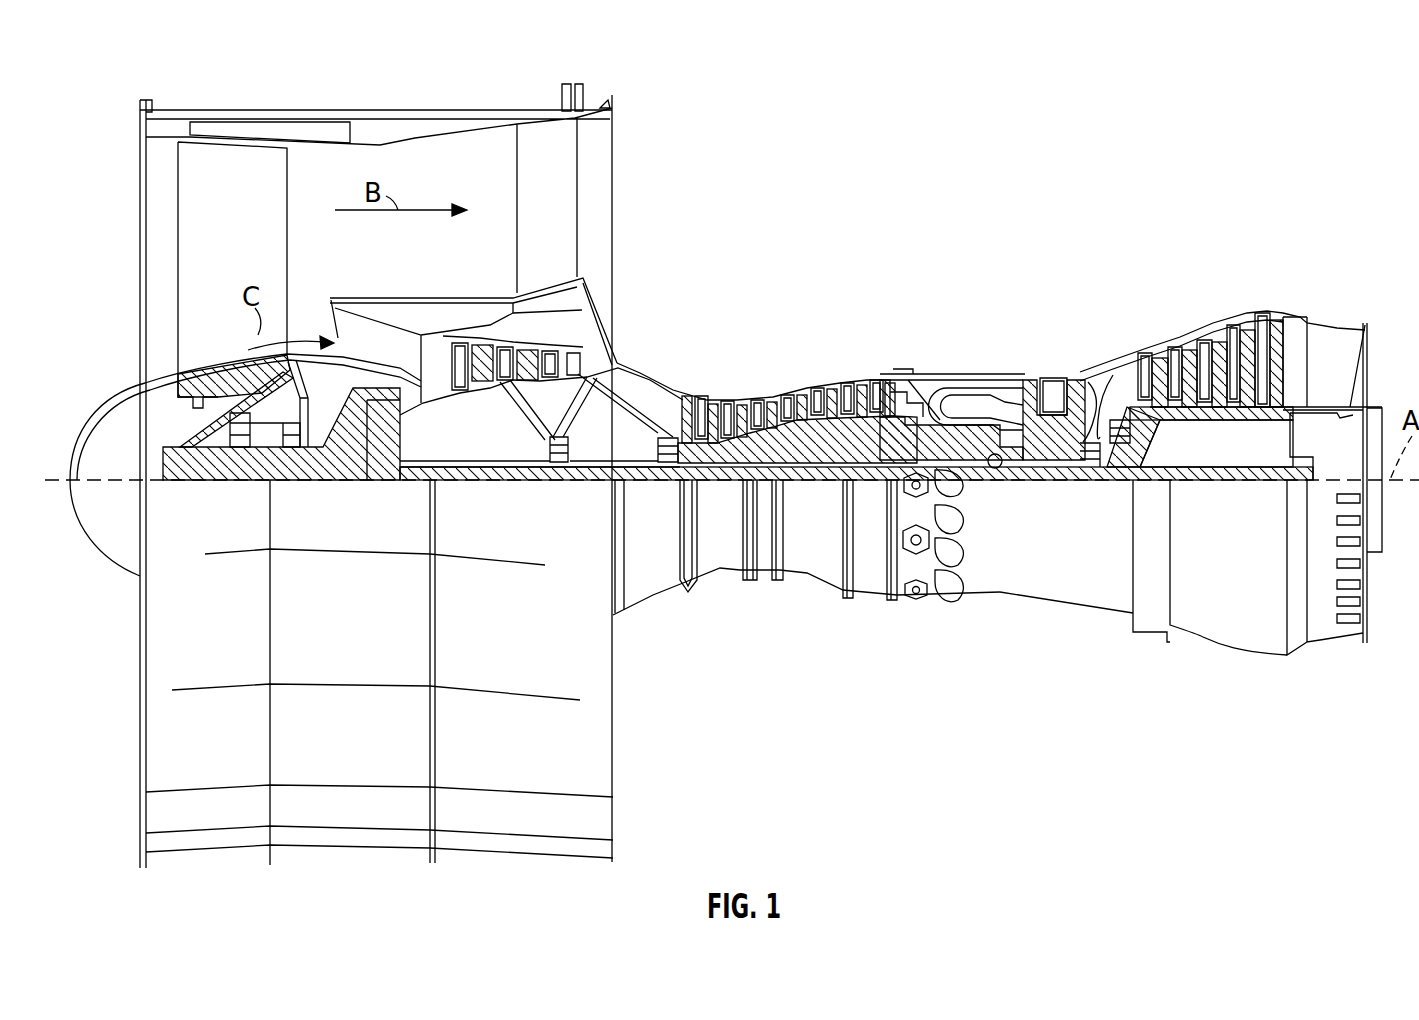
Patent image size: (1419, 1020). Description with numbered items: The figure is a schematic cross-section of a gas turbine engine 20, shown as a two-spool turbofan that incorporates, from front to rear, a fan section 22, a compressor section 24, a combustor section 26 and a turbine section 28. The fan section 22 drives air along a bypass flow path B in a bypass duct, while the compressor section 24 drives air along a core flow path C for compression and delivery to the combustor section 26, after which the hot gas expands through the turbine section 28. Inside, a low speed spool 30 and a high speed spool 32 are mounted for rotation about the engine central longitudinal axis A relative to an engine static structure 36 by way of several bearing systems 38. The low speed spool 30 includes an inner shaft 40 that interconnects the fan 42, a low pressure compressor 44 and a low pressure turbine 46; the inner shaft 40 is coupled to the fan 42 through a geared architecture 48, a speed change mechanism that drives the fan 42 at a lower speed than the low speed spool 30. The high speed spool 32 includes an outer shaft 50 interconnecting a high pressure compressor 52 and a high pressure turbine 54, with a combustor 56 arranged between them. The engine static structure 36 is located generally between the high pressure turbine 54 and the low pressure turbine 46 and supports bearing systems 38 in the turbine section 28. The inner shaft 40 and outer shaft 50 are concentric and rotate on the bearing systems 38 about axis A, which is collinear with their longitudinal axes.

The gas turbine engine 20 is at (1186, 154).
The fan section 22 is at (243, 105).
The compressor section 24 is at (802, 341).
The combustor section 26 is at (1015, 235).
The turbine section 28 is at (1118, 322).
The low speed spool 30 is at (834, 480).
The high speed spool 32 is at (911, 373).
The engine static structure 36 is at (876, 594).
The bearing systems 38 is at (252, 447).
The inner shaft 40 is at (625, 483).
The fan 42 is at (257, 241).
The low pressure compressor 44 is at (530, 360).
The low pressure turbine 46 is at (1223, 345).
The geared architecture 48 is at (372, 462).
The outer shaft 50 is at (992, 470).
The high pressure compressor 52 is at (793, 450).
The high pressure turbine 54 is at (1048, 377).
The combustor 56 is at (977, 397).